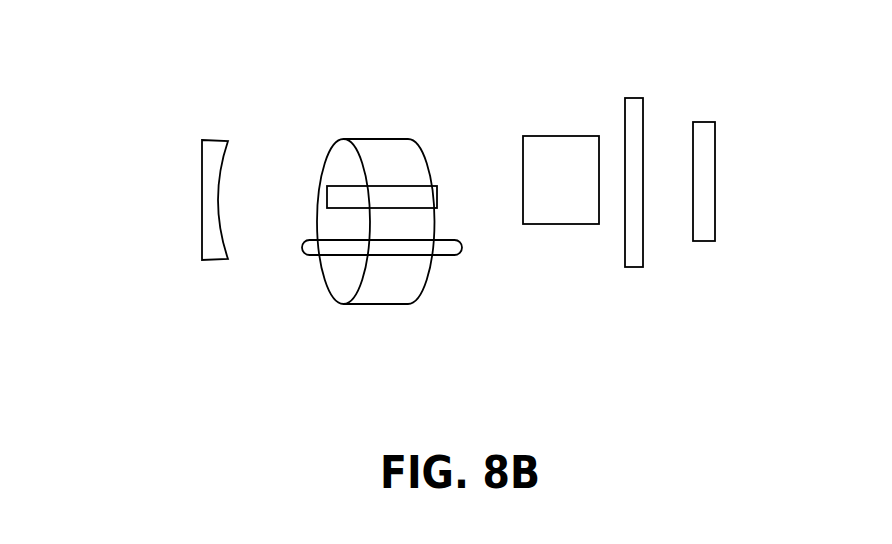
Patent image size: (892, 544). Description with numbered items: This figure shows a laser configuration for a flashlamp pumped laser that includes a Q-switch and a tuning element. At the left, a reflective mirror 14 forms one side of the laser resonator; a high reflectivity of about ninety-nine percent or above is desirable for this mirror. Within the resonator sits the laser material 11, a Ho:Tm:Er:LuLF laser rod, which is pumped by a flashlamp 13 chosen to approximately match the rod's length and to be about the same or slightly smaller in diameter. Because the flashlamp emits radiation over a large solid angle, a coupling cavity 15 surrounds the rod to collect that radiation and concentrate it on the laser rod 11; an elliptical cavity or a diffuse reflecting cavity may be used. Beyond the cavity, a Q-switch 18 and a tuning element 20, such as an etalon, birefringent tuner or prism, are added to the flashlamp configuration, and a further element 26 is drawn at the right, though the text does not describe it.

The laser material 11 is at (437, 194).
The flashlamp 13 is at (443, 257).
The reflective mirror 14 is at (202, 178).
The coupling cavity 15 is at (380, 304).
The Q-switch 18 is at (535, 136).
The tuning element 20 is at (635, 98).
The narrow plate / detector 26 is at (703, 122).